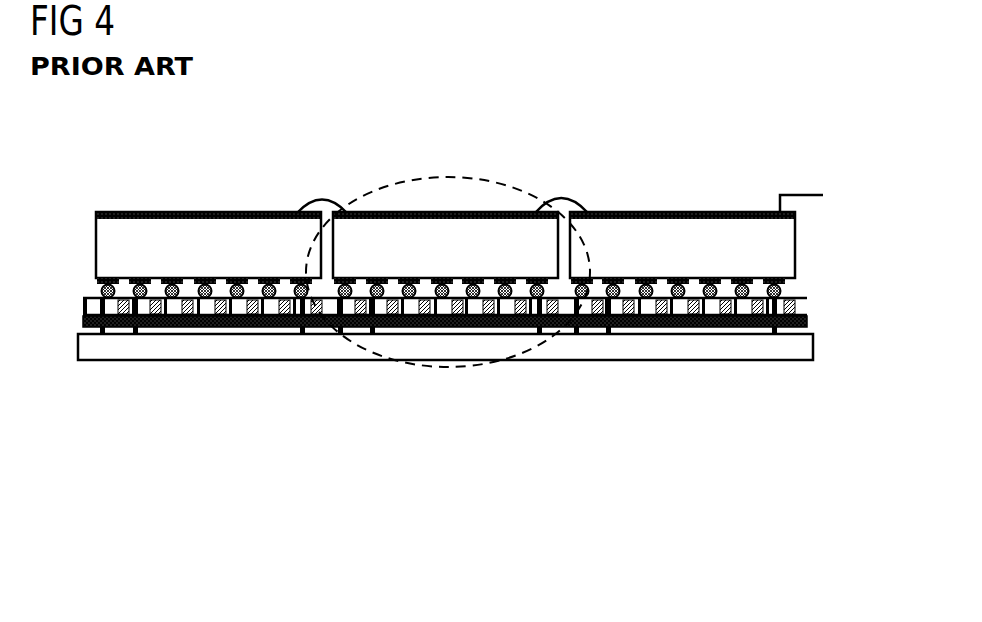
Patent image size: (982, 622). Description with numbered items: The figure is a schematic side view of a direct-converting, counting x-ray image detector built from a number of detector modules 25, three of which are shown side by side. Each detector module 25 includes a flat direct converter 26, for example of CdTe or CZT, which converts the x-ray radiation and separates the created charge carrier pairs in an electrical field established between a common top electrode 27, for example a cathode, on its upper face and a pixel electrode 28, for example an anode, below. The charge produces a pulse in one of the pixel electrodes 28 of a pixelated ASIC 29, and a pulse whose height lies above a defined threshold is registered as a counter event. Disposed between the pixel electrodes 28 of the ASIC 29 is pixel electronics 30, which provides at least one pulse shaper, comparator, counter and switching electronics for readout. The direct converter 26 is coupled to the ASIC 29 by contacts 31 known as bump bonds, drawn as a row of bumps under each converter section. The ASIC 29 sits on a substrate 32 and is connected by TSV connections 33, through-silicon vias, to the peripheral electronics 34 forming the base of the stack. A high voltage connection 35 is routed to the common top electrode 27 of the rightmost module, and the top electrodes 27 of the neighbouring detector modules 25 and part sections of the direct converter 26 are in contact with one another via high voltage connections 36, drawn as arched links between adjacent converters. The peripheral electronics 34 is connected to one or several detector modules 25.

The detector module 25 is at (515, 183).
The direct converter 26 is at (778, 250).
The common top electrode 27 is at (115, 212).
The pixel electrode 28 is at (170, 307).
The ASIC 29 is at (798, 304).
The pixel electronics 30 is at (248, 307).
The contacts 31 is at (103, 290).
The substrate 32 is at (807, 322).
The TSV connections 33 is at (605, 331).
The peripheral electronics 34 is at (793, 348).
The high voltage connection 35 is at (808, 195).
The high voltage connections 36 is at (298, 206).